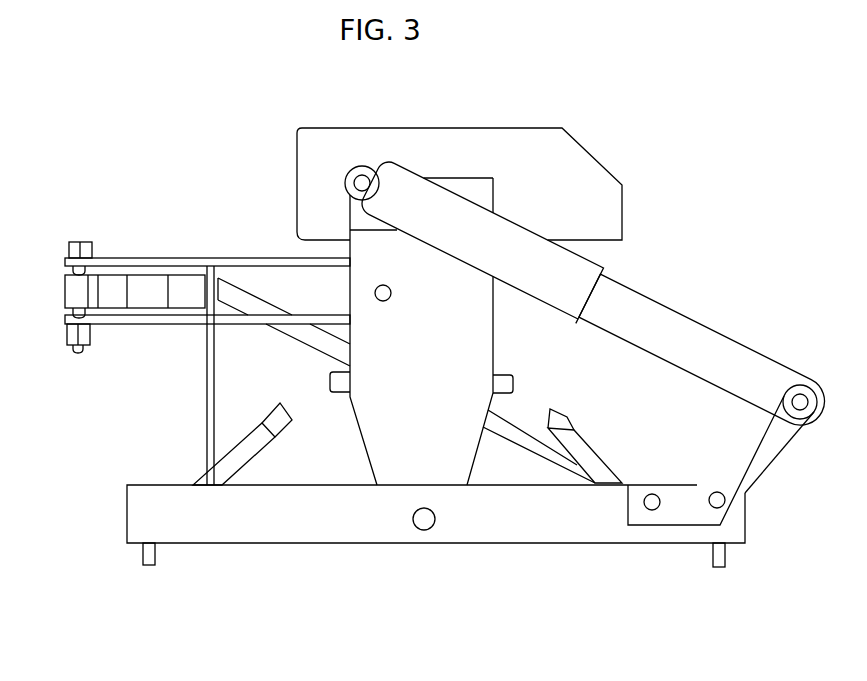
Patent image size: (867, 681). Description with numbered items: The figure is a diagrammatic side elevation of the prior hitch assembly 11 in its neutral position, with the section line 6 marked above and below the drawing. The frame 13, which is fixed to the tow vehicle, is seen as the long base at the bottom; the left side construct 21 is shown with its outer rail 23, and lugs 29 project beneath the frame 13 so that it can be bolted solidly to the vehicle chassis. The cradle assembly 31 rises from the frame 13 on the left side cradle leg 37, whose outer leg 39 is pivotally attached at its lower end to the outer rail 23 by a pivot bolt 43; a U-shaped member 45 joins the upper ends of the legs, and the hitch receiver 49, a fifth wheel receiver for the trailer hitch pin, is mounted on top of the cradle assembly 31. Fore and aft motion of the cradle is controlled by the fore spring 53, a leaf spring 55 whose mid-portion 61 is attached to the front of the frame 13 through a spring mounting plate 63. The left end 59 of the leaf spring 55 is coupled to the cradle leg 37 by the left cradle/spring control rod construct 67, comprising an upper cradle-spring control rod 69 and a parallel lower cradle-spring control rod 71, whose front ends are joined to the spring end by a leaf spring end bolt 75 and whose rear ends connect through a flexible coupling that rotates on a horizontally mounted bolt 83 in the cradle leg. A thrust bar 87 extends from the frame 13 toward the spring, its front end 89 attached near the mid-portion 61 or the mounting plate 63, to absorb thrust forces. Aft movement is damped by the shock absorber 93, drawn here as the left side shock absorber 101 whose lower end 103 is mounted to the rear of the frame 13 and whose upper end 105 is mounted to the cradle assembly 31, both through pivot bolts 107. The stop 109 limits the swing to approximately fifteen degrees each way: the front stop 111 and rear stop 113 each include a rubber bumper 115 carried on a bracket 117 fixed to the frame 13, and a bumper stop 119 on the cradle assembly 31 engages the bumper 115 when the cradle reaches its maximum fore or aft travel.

The section line 6- 6 is at (389, 112).
The hitch assembly 11 is at (577, 75).
The frame 13 is at (366, 546).
The left side construct 21 is at (522, 535).
The outer rail 23 is at (587, 535).
The lugs 29 is at (143, 560).
The cradle assembly 31 is at (292, 242).
The left side cradle leg 37 is at (376, 466).
The outer leg 39 is at (368, 429).
The pivot bolts 43 is at (424, 531).
The U-shaped member 45 is at (472, 178).
The hitch receiver 49 is at (337, 126).
The fore spring 53 is at (83, 365).
The leaf spring 55 is at (66, 293).
The left end 59 is at (67, 307).
The mid-portion 61 is at (190, 285).
The spring mounting plate 63 is at (207, 374).
The left cradle/spring control rod construct 67 is at (98, 250).
The upper cradle-spring control rod 69 is at (117, 258).
The lower cradle-spring control rod 71 is at (143, 324).
The left leaf spring end bolt 75 is at (68, 252).
The horizontally mounted bolt 83 is at (375, 293).
The thrust bar 87 is at (508, 410).
The front end 89 is at (235, 293).
The shock absorber 93 is at (686, 260).
The left side shock absorber 101 is at (675, 320).
The lower end 103 is at (738, 352).
The upper end 105 is at (412, 184).
The pivot bolts 107 is at (345, 182).
The stop 109 is at (216, 456).
The front stop 111 is at (230, 436).
The rear stop means 113 is at (612, 425).
The rubber bumpers 115 is at (285, 404).
The bracket 117 is at (256, 430).
The bumper stops 119 is at (333, 378).